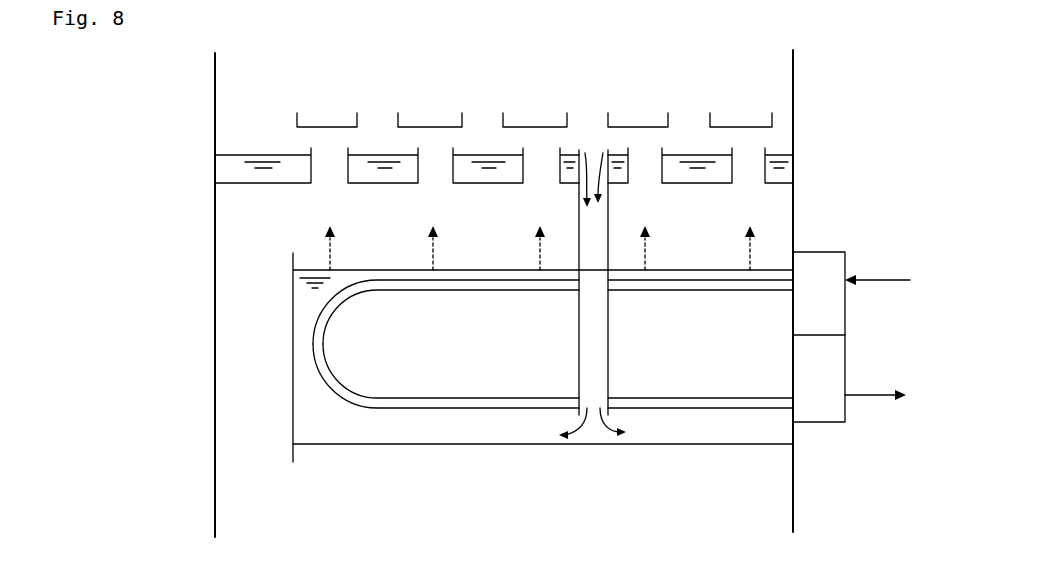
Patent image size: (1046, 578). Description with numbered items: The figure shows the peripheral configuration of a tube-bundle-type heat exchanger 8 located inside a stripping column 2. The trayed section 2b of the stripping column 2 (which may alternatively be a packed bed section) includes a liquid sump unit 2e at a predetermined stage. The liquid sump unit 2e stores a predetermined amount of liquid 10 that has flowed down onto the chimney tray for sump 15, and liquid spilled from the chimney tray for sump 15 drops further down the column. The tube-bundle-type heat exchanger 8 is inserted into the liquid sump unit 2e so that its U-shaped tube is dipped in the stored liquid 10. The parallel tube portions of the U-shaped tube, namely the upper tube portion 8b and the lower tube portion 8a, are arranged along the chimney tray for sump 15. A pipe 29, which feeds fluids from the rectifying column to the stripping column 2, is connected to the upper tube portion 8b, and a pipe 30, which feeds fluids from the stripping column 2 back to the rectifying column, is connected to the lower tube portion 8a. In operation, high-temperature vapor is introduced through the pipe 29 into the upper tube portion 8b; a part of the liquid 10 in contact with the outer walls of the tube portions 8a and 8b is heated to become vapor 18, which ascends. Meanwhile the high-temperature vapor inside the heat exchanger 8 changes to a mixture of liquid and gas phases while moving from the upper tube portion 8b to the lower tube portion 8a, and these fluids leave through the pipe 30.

The stripping column 2 is at (211, 115).
The trayed section 2b is at (503, 53).
The liquid sump unit 2e is at (544, 357).
The tube-bundle-type heat exchanger 8 is at (813, 410).
The lower tube portion 8a is at (752, 393).
The upper tube portion 8b is at (765, 278).
The liquid 10 is at (310, 300).
The chimney tray for sump 15 is at (363, 447).
The vapor 18 is at (437, 241).
The pipe 29 is at (880, 281).
The pipe 30 is at (865, 398).